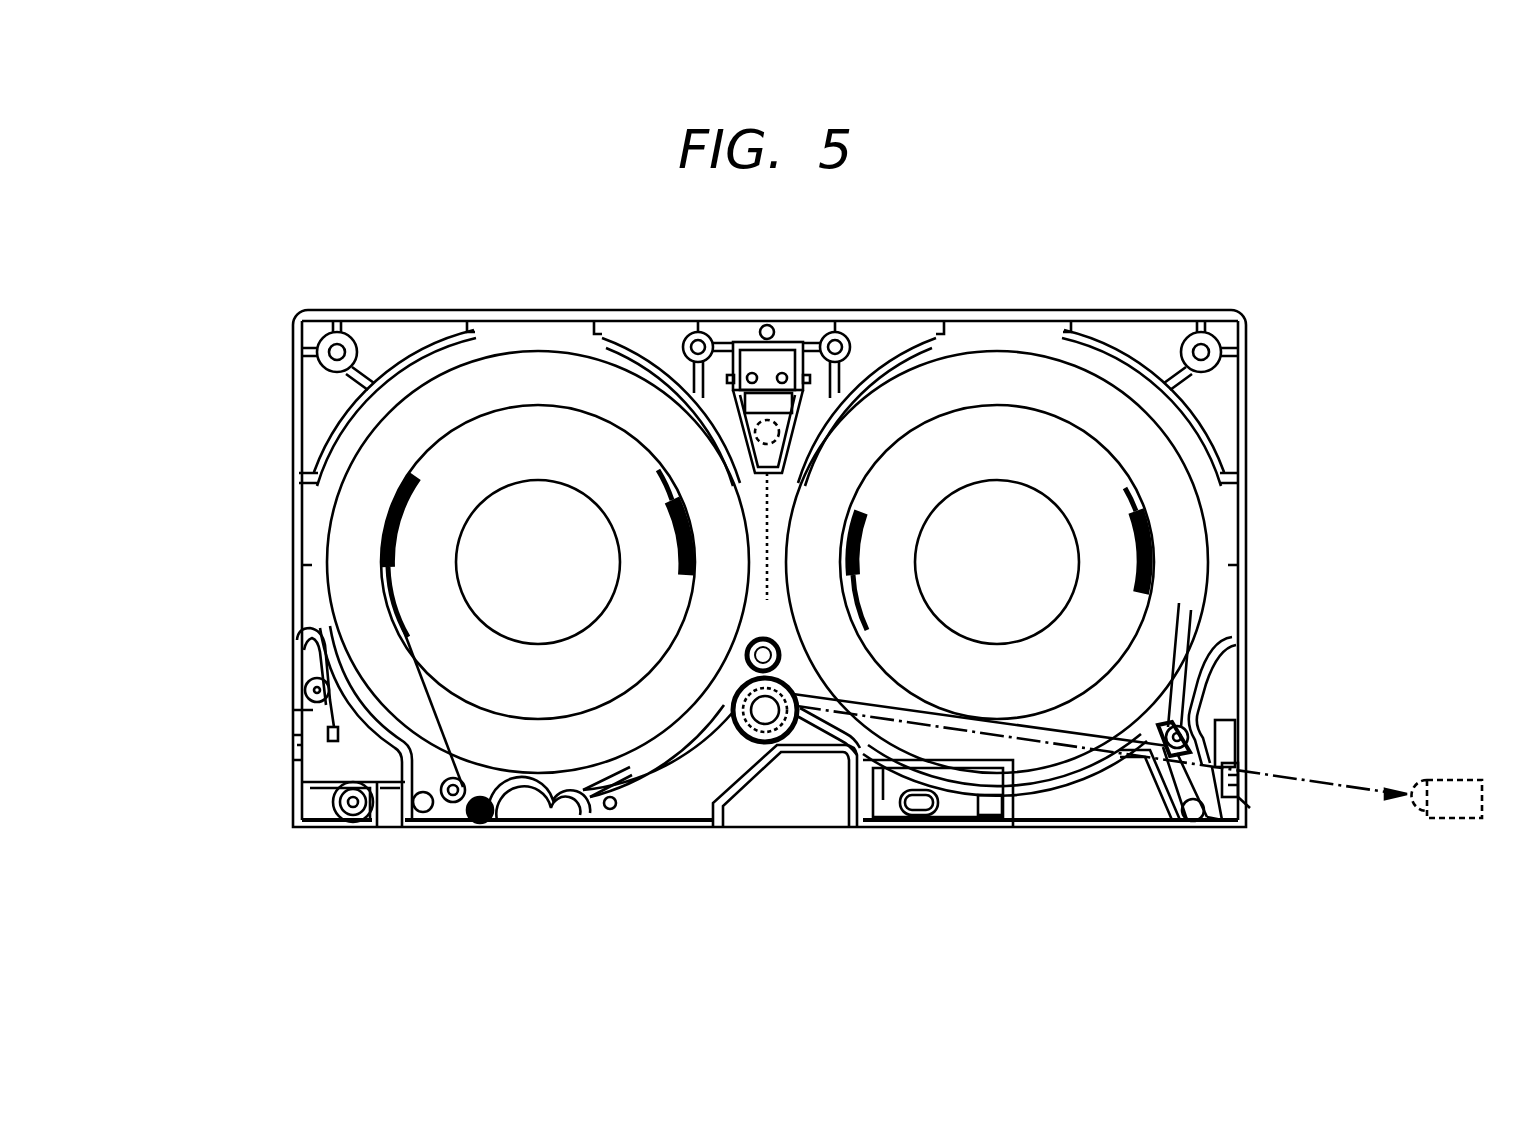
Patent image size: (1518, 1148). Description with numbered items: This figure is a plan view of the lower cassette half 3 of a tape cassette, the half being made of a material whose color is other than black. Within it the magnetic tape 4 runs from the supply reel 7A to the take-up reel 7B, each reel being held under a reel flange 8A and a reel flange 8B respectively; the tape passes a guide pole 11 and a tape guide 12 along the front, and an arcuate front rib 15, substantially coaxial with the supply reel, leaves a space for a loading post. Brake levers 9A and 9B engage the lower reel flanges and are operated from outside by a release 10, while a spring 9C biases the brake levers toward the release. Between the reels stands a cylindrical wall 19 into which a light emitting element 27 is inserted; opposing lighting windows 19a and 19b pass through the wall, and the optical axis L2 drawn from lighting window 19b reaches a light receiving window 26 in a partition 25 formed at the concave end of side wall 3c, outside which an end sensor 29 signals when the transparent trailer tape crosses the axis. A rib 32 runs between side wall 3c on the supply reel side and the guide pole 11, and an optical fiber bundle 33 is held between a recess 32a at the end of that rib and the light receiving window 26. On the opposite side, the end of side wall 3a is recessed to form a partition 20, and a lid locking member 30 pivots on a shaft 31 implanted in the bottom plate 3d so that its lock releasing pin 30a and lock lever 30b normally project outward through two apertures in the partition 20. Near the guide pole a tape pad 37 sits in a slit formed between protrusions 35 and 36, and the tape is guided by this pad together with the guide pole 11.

The lower cassette half 3 is at (1160, 312).
The side wall 3a is at (292, 396).
The side wall 3c is at (1247, 388).
The bottom plate 3d is at (310, 566).
The magnetic tape 4 is at (818, 828).
The supply reel 7A is at (964, 476).
The take-up reel 7B is at (514, 476).
The reel flange 8A is at (1013, 350).
The reel flange 8B is at (549, 350).
The brake lever 9A is at (838, 332).
The brake lever 9B is at (698, 331).
The spring 9C is at (790, 372).
The release 10 is at (757, 365).
The guide pole 11 is at (1184, 648).
The tape guide 12 is at (1212, 815).
The front rib 15 is at (1053, 800).
The cylindrical wall 19 is at (797, 690).
The lighting window 19a is at (728, 723).
The lighting window 19b is at (797, 708).
The partition 20 is at (305, 828).
The partition 25 is at (1269, 814).
The light receiving window 26 is at (1240, 740).
The light emitting element 27 is at (770, 742).
The end sensor 29 is at (1437, 818).
The lid locking member 30 is at (335, 790).
The lock releasing pin 30a is at (305, 688).
The lock lever 30b is at (300, 755).
The shaft 31 is at (312, 668).
The rib 32 is at (1232, 645).
The recess 32a is at (1238, 700).
The optical fiber bundle 33 is at (1240, 757).
The protrusion 35 is at (1160, 790).
The protrusion 36 is at (1195, 826).
The tape pad 37 is at (1166, 735).
The optical axis L2 is at (1335, 786).